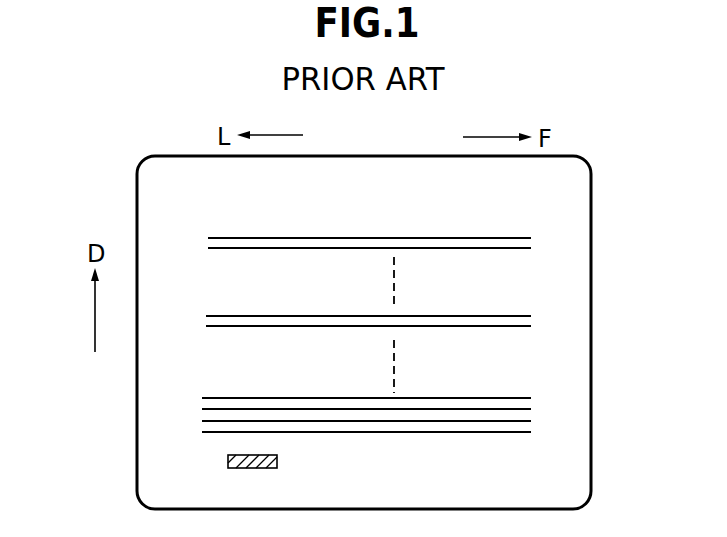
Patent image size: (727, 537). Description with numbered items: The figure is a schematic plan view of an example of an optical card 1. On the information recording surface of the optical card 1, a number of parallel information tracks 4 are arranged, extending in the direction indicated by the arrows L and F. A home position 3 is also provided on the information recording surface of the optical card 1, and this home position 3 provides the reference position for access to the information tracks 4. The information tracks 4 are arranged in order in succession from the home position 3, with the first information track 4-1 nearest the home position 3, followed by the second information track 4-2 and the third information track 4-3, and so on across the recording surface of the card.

The optical card 1 is at (597, 238).
The home position 3 is at (278, 458).
The information tracks 4 is at (518, 317).
The information track 4-1 is at (197, 435).
The information track 4-2 is at (195, 423).
The information track 4-3 is at (195, 412).